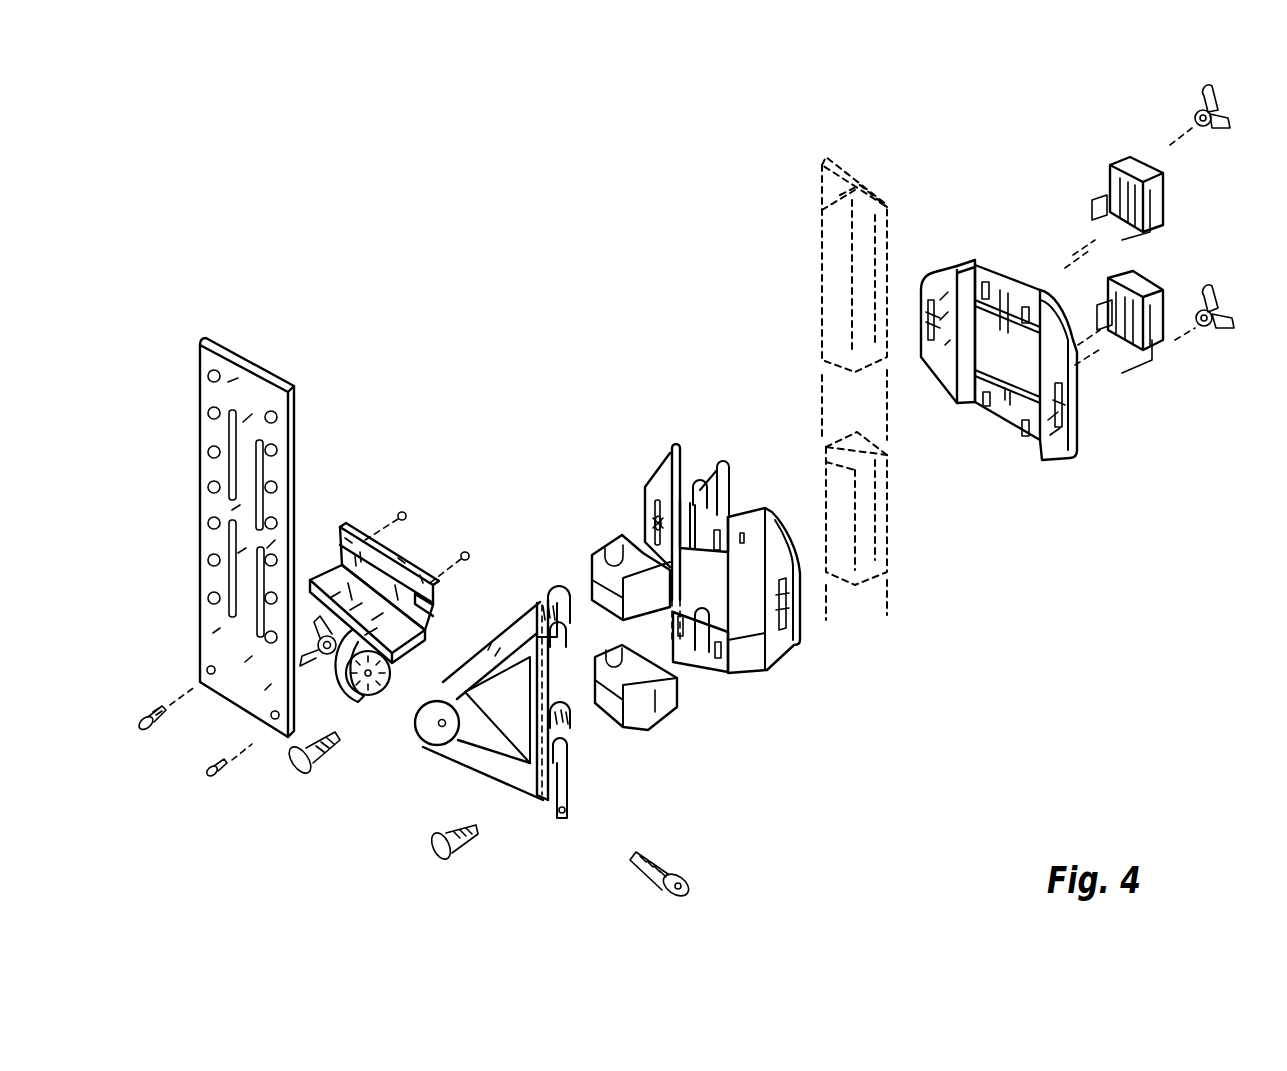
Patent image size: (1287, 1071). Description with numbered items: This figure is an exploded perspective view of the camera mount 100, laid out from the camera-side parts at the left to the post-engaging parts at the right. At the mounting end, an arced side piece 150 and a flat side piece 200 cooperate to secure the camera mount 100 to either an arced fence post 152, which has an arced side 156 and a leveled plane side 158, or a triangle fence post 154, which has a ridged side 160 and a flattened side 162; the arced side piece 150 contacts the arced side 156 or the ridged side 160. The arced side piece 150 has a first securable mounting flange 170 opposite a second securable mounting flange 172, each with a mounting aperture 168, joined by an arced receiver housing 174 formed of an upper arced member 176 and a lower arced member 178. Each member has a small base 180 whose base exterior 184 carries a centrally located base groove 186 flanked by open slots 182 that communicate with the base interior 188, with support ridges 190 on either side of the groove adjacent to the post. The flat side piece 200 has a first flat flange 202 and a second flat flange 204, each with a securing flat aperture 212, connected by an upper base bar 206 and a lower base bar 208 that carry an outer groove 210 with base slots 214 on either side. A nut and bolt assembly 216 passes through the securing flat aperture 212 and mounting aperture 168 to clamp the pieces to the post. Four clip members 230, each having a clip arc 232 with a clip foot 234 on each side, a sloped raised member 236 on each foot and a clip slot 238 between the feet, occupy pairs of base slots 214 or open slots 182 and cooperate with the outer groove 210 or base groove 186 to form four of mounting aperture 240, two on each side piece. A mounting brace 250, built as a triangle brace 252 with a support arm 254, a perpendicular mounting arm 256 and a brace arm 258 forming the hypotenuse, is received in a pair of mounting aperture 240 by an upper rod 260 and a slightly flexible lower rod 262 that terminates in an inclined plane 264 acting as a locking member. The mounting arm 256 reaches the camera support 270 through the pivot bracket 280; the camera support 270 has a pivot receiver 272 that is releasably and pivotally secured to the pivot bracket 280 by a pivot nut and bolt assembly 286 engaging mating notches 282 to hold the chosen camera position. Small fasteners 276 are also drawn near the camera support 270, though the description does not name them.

The camera mount 100 is at (523, 186).
The arced side piece 150 is at (775, 769).
The arced fence post 152 is at (880, 506).
The triangle fence post 154 is at (801, 140).
The arced side 156 is at (877, 600).
The leveled plane side 158 is at (854, 405).
The ridged side 160 is at (820, 232).
The flattened side 162 is at (856, 185).
The mounting aperture 168 is at (658, 516).
The first securable mounting flange 170 is at (668, 452).
The second securable mounting flange 172 is at (780, 650).
The arced receiver housing 174 is at (695, 754).
The upper arced member 176 is at (718, 392).
The lower arced member 178 is at (700, 648).
The small base 180 is at (685, 480).
The open slots 182 is at (676, 478).
The base exterior 184 is at (631, 530).
The centrally located base groove 186 is at (710, 498).
The base interior 188 is at (770, 437).
The support ridges 190 is at (697, 483).
The flat side piece 200 is at (1106, 527).
The first flat flange 202 is at (938, 292).
The second flat flange 204 is at (1053, 462).
The upper base bar 206 is at (972, 280).
The lower base bar 208 is at (977, 404).
The outer groove 210 is at (990, 284).
The securing flat aperture 212 is at (930, 332).
The base slots 214 is at (992, 291).
The nut and bolt assembly 216 is at (430, 838).
The clip members 230 is at (605, 585).
The clip arc 232 is at (1160, 340).
The clip foot 234 is at (1118, 210).
The sloped raised member 236 is at (1120, 216).
The clip slot 238 is at (1142, 183).
The mounting aperture 240 is at (987, 603).
The mounting brace 250 is at (528, 822).
The triangle brace 252 is at (452, 752).
The support arm 254 is at (538, 680).
The mounting arm 256 is at (520, 632).
The brace arm 258 is at (482, 772).
The upper rod 260 is at (555, 607).
The lower rod 262 is at (576, 760).
The inclined plane 264 is at (560, 832).
The camera support 270 is at (369, 515).
The pivot receiver 272 is at (300, 725).
The screw 276 is at (207, 773).
The pivot bracket 280 is at (410, 745).
The mating notches 282 is at (437, 723).
The pivot nut and bolt assembly 286 is at (318, 632).